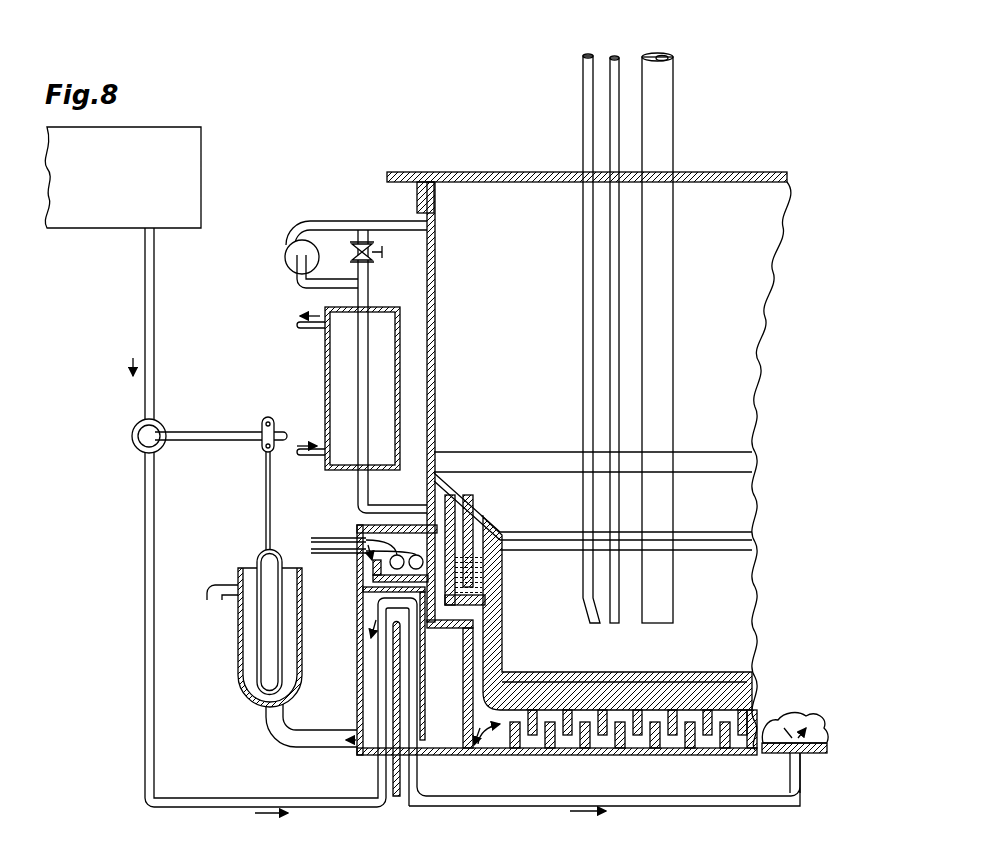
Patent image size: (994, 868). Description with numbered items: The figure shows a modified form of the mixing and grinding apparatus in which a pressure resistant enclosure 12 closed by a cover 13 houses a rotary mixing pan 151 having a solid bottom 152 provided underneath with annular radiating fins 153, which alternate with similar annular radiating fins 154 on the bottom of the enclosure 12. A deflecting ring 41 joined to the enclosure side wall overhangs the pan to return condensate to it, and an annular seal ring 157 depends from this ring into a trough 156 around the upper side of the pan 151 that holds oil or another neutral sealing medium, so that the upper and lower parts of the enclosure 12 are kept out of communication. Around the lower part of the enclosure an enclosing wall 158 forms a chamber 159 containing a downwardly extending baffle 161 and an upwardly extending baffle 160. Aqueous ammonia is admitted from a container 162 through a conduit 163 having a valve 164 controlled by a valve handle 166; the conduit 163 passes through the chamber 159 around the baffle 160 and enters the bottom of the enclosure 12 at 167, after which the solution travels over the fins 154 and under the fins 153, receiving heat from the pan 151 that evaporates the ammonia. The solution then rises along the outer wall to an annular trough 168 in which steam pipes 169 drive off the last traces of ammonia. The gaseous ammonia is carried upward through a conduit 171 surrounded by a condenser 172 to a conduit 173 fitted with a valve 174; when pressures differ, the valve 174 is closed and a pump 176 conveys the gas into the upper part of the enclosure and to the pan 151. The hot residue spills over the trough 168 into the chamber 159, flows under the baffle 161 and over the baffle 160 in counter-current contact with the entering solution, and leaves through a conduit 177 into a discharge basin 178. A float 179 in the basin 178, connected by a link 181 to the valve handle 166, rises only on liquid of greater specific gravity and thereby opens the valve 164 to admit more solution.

The pressure resistant enclosure 12 is at (436, 292).
The cover 13 is at (493, 172).
The deflecting ring 41 is at (460, 497).
The rotary mixing pan 151 is at (503, 637).
The solid bottom 152 is at (750, 682).
The annular radiating fins 153 is at (490, 724).
The annular radiating fins 154 is at (563, 733).
The trough 156 is at (470, 592).
The seal ring 157 is at (483, 574).
The enclosing wall 158 is at (357, 657).
The chamber 159 is at (460, 738).
The upwardly extending baffle 160 is at (393, 683).
The downwardly extending baffle 161 is at (448, 734).
The container 162 is at (93, 222).
The conduit 163 is at (141, 296).
The valve 164 is at (132, 434).
The valve handle 166 is at (178, 429).
The enclosure bottom inlet 167 is at (802, 790).
The annular trough 168 is at (365, 572).
The steam pipes 169 is at (397, 527).
The conduit 171 is at (357, 484).
The condenser 172 is at (325, 368).
The conduit 173 is at (378, 221).
The valve 174 is at (386, 252).
The pump 176 is at (287, 264).
The conduit 177 is at (315, 750).
The discharge basin 178 is at (238, 656).
The float 179 is at (270, 672).
The link 181 is at (265, 500).